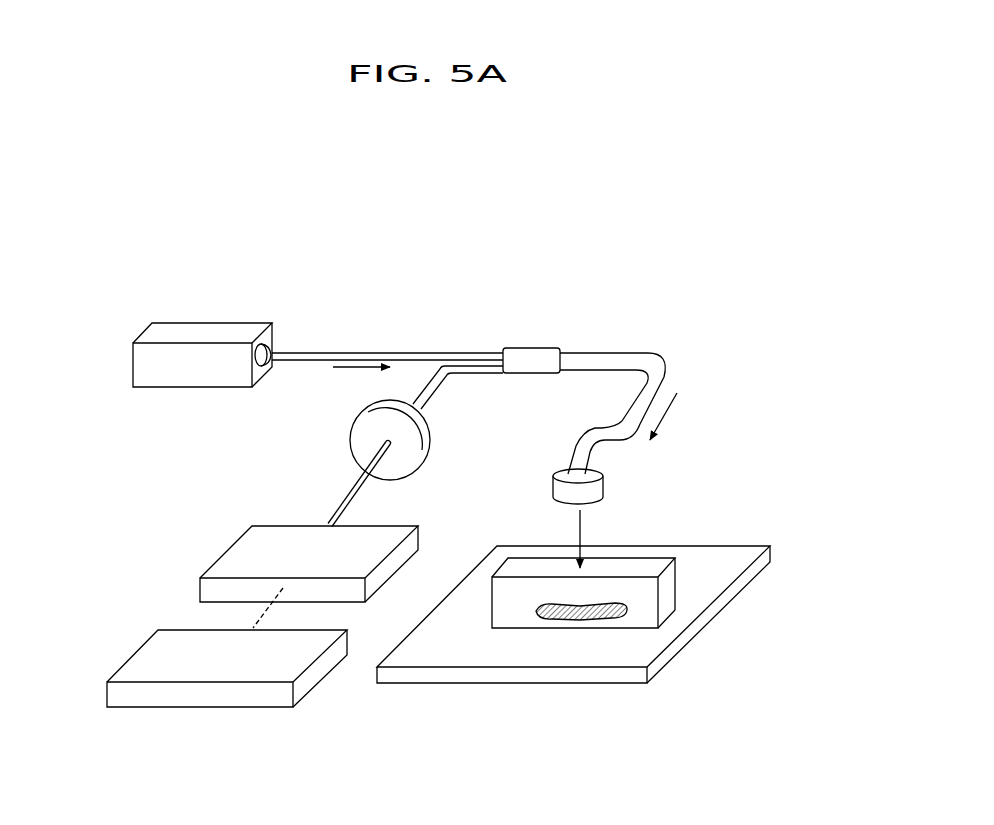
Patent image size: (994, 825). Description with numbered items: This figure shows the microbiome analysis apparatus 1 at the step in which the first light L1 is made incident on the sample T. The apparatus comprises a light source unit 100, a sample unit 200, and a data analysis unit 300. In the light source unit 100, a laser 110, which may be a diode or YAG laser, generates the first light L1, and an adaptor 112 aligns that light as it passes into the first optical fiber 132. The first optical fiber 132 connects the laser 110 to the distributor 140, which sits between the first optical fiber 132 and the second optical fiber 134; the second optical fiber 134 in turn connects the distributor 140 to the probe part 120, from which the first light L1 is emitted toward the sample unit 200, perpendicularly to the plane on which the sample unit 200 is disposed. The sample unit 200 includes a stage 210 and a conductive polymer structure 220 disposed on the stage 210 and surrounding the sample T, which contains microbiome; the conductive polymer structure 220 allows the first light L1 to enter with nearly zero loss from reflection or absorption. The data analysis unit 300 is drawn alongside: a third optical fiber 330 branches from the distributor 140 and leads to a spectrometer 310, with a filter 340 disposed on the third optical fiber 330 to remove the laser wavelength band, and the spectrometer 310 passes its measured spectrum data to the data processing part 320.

The microbiome analysis apparatus 1 is at (765, 197).
The light source unit 100 is at (227, 253).
The laser 110 is at (218, 332).
The adaptor 112 is at (271, 338).
The first optical fiber 132 is at (384, 354).
The distributor 140 is at (533, 358).
The second optical fiber 134 is at (601, 362).
The probe part 120 is at (597, 455).
The first light L1 is at (583, 525).
The sample unit 200 is at (796, 602).
The stage 210 is at (690, 632).
The conductive polymer structure 220 is at (665, 593).
The sample T is at (576, 621).
The data analysis unit 300 is at (241, 423).
The spectrometer 310 is at (236, 542).
The data processing part 320 is at (137, 651).
The third optical fiber 330 is at (343, 488).
The filter 340 is at (355, 439).